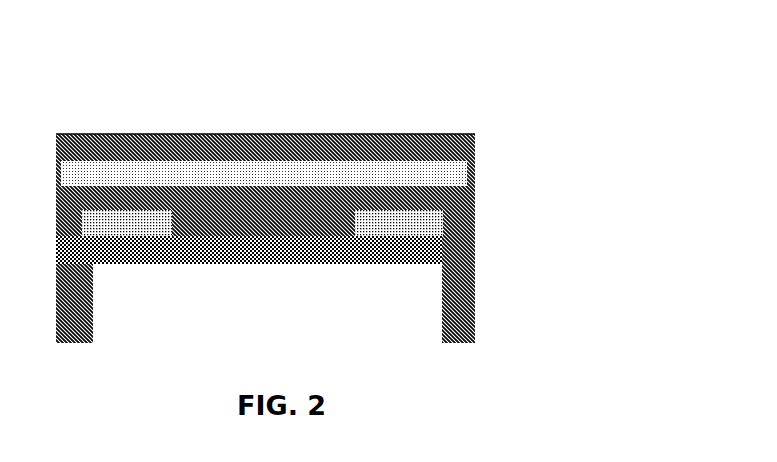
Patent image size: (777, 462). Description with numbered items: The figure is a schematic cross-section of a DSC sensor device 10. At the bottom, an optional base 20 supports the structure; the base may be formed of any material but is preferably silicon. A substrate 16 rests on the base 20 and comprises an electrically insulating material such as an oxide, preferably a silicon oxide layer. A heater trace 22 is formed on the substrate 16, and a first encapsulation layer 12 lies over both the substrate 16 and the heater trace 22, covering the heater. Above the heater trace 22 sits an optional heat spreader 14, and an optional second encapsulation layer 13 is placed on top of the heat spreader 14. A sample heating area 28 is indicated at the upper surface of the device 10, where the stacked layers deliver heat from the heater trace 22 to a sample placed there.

The DSC sensor device 10 is at (354, 176).
The first encapsulation layer 12 is at (477, 208).
The second encapsulation layer 13 is at (477, 143).
The heat spreader 14 is at (466, 172).
The substrate 16 is at (477, 248).
The base 20 is at (477, 288).
The heater trace 22 is at (157, 235).
The sample heating area 28 is at (216, 129).